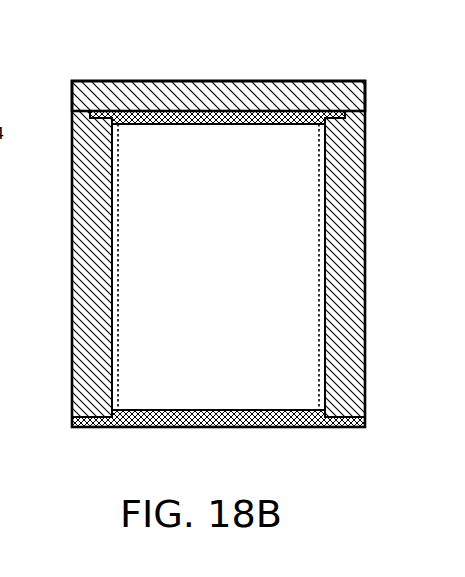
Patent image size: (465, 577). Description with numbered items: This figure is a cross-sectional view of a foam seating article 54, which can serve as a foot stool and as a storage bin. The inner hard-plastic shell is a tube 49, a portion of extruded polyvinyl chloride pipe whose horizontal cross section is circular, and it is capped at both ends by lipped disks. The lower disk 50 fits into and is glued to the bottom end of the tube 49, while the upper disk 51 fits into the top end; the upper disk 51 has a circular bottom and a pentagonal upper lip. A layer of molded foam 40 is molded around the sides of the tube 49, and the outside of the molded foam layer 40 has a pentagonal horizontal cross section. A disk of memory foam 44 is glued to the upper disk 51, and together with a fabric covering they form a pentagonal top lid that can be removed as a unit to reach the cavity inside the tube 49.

The foam seating article 54 is at (58, 61).
The memory foam disk 44 is at (366, 96).
The molded foam layer 40 is at (366, 228).
The upper disk 51 is at (228, 125).
The lower disk 50 is at (224, 410).
The tube 49 is at (318, 233).